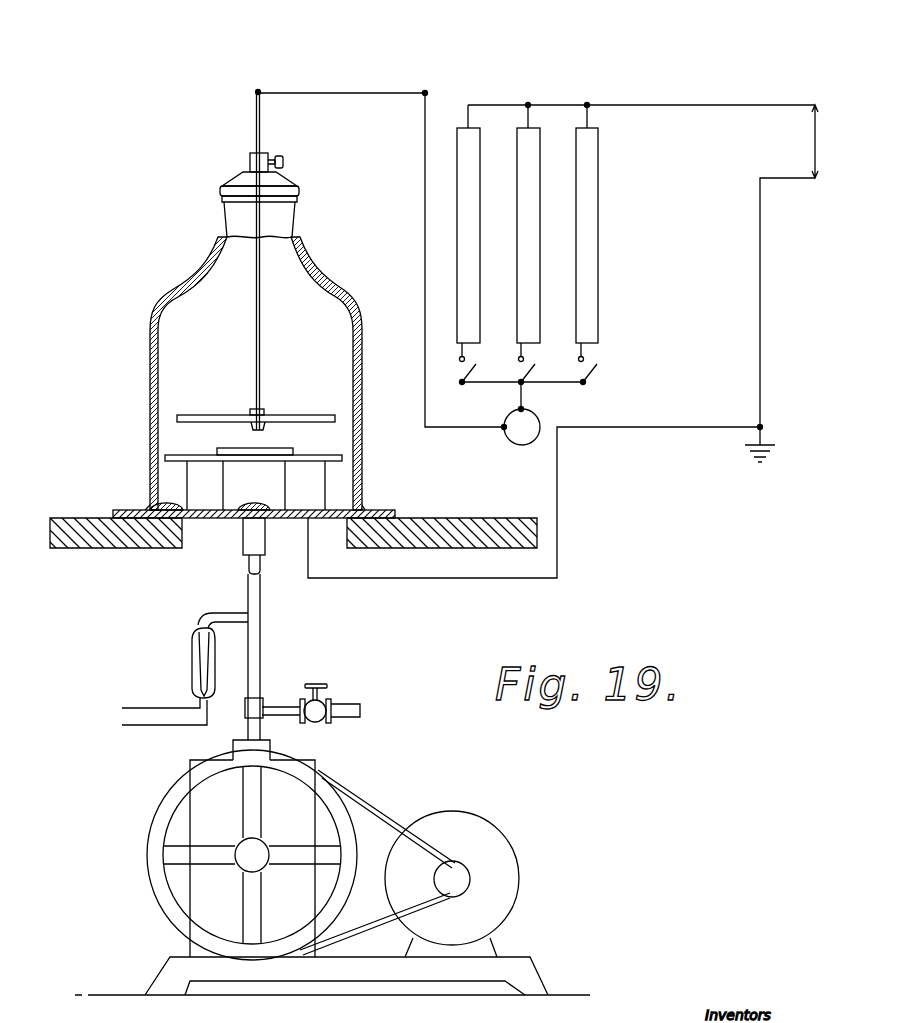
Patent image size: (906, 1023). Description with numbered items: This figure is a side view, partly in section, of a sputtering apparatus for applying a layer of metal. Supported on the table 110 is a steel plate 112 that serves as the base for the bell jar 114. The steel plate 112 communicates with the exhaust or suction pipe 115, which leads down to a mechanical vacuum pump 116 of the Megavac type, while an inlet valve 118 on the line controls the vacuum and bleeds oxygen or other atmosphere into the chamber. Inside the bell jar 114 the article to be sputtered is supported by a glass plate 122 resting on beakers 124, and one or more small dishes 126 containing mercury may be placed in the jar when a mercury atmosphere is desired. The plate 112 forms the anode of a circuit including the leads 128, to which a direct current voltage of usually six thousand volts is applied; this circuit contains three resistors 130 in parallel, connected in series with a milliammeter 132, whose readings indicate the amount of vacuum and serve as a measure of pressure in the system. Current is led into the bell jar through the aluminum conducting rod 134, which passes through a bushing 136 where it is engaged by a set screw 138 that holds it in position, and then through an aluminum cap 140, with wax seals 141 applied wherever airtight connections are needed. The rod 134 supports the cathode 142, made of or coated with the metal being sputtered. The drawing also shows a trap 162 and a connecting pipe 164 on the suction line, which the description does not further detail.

The table 110 is at (487, 541).
The steel plate 112 is at (397, 517).
The bell jar 114 is at (269, 373).
The exhaust or suction pipe 115 is at (262, 635).
The mechanical vacuum pump 116 is at (200, 825).
The inlet valve 118 is at (330, 707).
The glass plate 122 is at (342, 457).
The beakers 124 is at (320, 476).
The small dishes 126 is at (160, 500).
The leads 128 is at (397, 82).
The resistors 130 is at (527, 190).
The milliammeter 132 is at (540, 421).
The conducting rod 134 is at (256, 108).
The bushing 136 is at (289, 145).
The set screw 138 is at (283, 157).
The aluminum cap 140 is at (299, 200).
The wax seals 141 is at (250, 154).
The cathode 142 is at (325, 400).
The trap 162 is at (192, 658).
The connecting pipe 164 is at (155, 725).